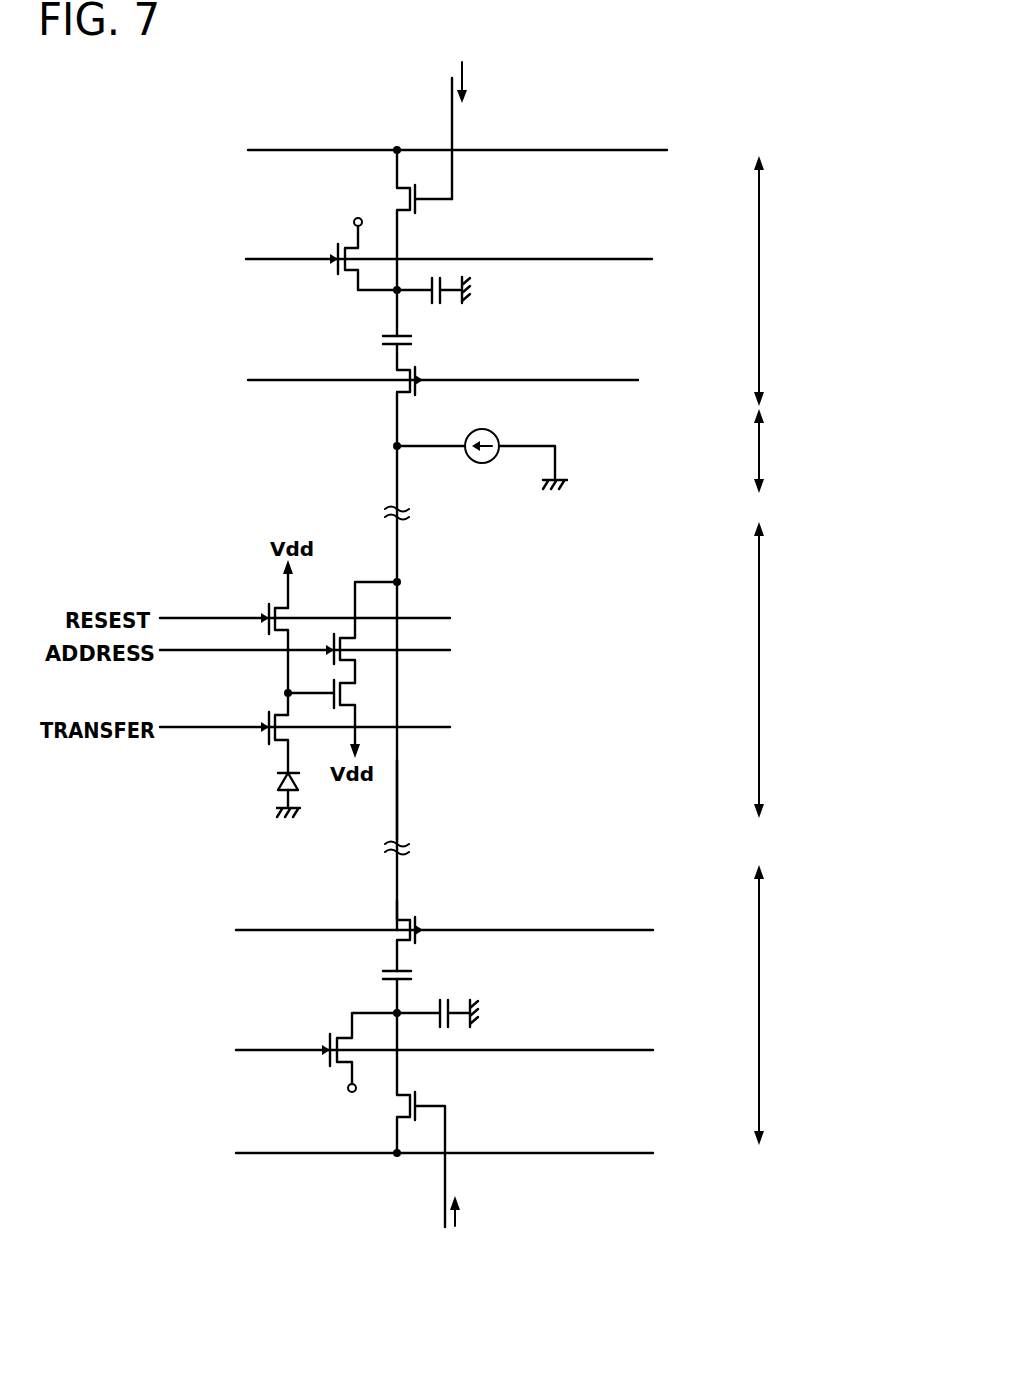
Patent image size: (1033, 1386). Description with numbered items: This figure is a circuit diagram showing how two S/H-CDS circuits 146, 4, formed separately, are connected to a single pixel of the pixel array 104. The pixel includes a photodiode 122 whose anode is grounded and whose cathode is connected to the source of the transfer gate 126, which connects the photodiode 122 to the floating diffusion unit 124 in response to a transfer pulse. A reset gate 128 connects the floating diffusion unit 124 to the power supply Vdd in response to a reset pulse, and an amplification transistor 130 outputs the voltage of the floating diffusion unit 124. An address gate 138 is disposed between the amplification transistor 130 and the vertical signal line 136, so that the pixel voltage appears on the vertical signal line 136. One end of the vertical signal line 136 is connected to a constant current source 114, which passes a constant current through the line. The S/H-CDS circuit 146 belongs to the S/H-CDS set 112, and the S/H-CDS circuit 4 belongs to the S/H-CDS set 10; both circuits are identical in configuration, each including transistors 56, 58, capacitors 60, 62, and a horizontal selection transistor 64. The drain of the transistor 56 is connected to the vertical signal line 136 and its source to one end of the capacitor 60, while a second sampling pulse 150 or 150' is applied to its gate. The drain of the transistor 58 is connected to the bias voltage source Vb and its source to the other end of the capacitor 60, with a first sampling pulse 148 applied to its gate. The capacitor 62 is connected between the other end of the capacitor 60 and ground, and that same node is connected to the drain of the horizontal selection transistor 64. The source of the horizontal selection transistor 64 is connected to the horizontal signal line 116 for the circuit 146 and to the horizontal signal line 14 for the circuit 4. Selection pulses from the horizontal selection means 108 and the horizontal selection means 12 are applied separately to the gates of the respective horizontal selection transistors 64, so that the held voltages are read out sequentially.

The S/H-CDS circuit 4 is at (289, 122).
The S/H-CDS set 10 is at (760, 282).
The horizontal selection means 12 is at (586, 129).
The horizontal signal line 14 is at (640, 152).
The transistor 56 is at (424, 377).
The transistor 58 is at (336, 264).
The capacitor 60 is at (384, 335).
The capacitor 62 is at (449, 301).
The horizontal selection transistor 64 is at (419, 210).
The pixel array 104 is at (760, 655).
The horizontal selection means 108 is at (588, 1222).
The S/H-CDS set 112 is at (760, 1012).
The constant current source 114 is at (494, 433).
The horizontal signal line 116 is at (645, 1152).
The photodiode 122 is at (274, 786).
The floating diffusion unit 124 is at (286, 694).
The transfer gate 126 is at (264, 741).
The reset gate 128 is at (268, 606).
The amplification transistor 130 is at (350, 694).
The vertical signal line 136 is at (400, 800).
The address gate 138 is at (348, 648).
The S/H-CDS circuit 146 is at (550, 894).
The first sampling pulse 148 is at (602, 257).
The second sampling pulse 150 is at (452, 904).
The second sampling pulse 150' is at (443, 350).